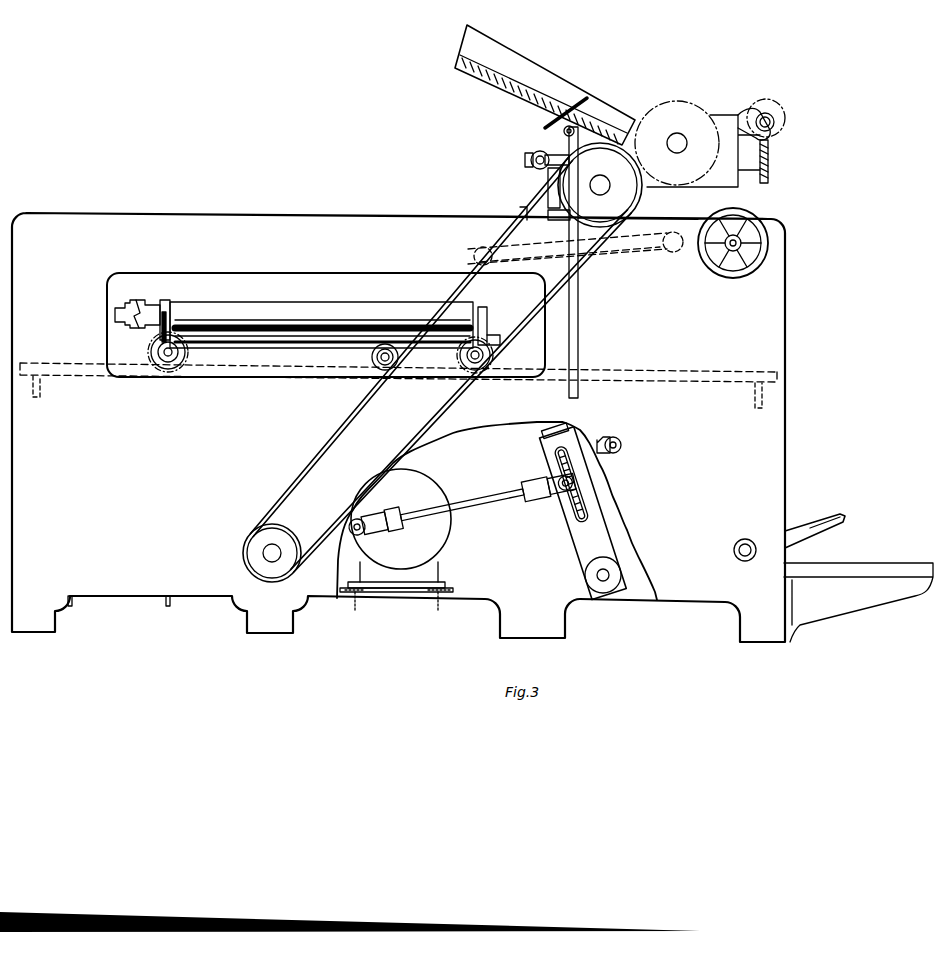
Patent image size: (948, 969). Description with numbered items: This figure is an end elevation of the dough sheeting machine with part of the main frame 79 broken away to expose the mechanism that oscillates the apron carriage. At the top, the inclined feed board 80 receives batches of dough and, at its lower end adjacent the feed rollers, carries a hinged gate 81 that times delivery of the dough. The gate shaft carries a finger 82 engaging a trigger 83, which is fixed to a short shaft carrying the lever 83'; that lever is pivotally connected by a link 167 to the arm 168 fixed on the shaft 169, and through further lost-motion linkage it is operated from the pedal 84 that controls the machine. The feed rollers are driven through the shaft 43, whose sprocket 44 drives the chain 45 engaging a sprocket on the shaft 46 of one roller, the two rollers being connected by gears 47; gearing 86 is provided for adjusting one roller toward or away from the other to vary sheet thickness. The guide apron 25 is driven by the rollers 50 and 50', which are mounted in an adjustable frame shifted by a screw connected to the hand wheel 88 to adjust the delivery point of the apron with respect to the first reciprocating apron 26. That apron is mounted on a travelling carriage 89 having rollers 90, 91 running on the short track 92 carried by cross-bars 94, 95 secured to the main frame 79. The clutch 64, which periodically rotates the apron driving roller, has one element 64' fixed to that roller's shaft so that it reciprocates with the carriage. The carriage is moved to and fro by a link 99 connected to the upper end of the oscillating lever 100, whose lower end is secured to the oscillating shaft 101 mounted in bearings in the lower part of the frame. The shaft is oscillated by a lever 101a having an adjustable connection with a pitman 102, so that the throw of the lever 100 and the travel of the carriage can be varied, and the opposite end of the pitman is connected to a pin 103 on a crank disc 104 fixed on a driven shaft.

The guide apron 25 is at (623, 255).
The first reciprocating apron 26 is at (285, 310).
The shaft 43 is at (265, 553).
The sprocket 44 is at (258, 541).
The chain 45 is at (548, 290).
The shaft of the roller 46 is at (610, 190).
The gears 47 is at (660, 177).
The roller of the guide apron 50 is at (589, 266).
The roller of the guide apron 50' is at (459, 251).
The clutch 64 is at (143, 304).
The clutch element 64' is at (185, 312).
The main frame 79 is at (110, 578).
The inclined feed board 80 is at (487, 82).
The hinged gate 81 is at (573, 97).
The finger 82 is at (563, 130).
The trigger 83 is at (536, 177).
The lever 83' is at (528, 188).
The pedal 84 is at (832, 518).
The gearing 86 is at (773, 148).
The hand wheel 88 is at (770, 251).
The travelling carriage 89 is at (152, 340).
The roller 90 is at (462, 372).
The roller 91 is at (165, 370).
The track 92 is at (40, 363).
The cross-bar 94 is at (756, 400).
The cross-bar 95 is at (38, 396).
The link 99 is at (505, 363).
The oscillating lever 100 is at (588, 462).
The oscillating shaft 101 is at (610, 573).
The lever 101a is at (583, 535).
The pitman 102 is at (465, 507).
The pin 103 is at (340, 573).
The crank disc 104 is at (432, 497).
The link 167 is at (578, 300).
The arm 168 is at (598, 437).
The shaft 169 is at (622, 445).